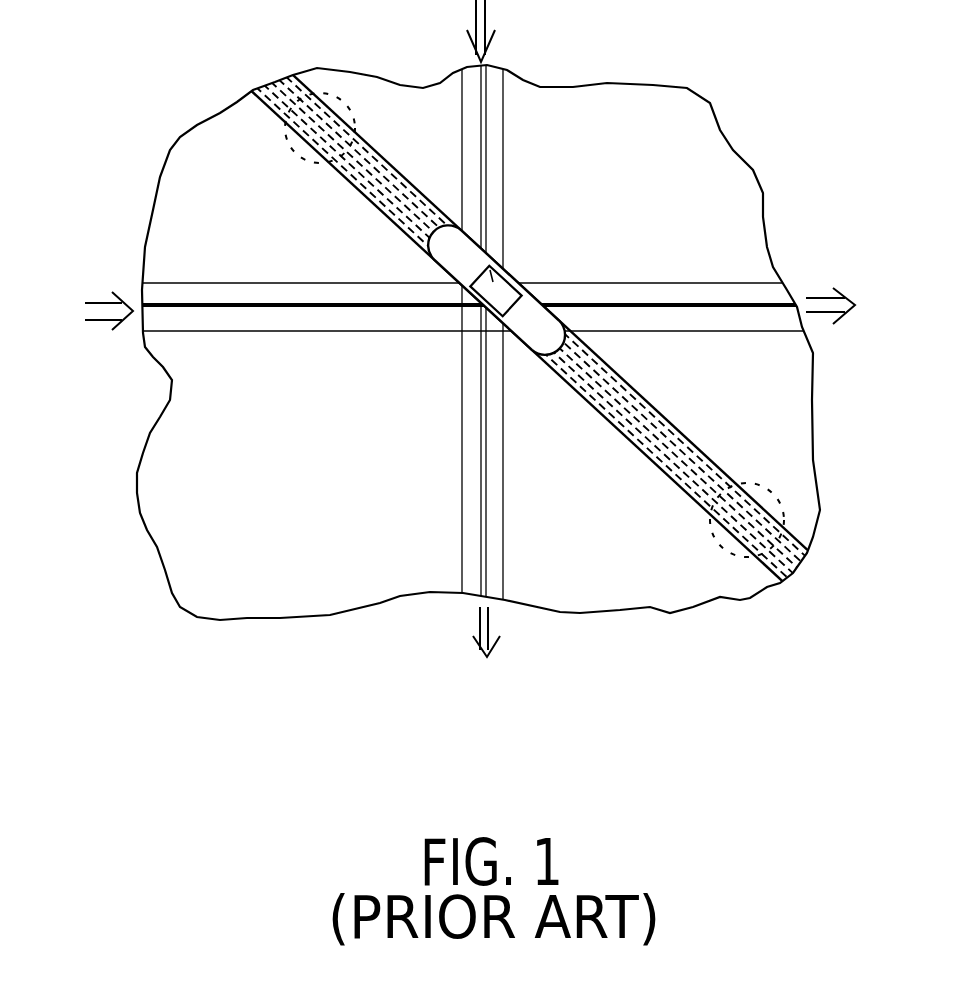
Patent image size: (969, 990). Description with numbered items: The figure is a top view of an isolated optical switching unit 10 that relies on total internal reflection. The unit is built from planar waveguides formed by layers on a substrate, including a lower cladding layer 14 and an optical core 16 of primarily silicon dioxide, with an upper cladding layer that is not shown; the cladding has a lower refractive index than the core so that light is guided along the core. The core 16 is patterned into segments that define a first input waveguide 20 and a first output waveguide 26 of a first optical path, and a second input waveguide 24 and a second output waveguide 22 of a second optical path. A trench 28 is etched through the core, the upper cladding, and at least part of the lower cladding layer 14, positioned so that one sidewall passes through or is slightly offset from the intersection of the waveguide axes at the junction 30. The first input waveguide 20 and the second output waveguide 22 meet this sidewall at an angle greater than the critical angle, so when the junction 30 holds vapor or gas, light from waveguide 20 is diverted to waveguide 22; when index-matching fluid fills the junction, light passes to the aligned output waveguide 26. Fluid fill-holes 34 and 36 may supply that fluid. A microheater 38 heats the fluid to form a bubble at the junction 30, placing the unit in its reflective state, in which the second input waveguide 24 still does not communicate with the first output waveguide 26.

The switching unit 10 is at (126, 161).
The lower cladding layer 14 is at (163, 533).
The optical core 16 is at (197, 333).
The first input waveguide 20 is at (255, 284).
The second output waveguide 22 is at (468, 383).
The second input waveguide 24 is at (493, 148).
The first output waveguide 26 is at (625, 283).
The trench 28 is at (386, 217).
The junction 30 is at (540, 360).
The fluid fill-hole 34 is at (355, 122).
The fluid fill-hole 36 is at (720, 545).
The microheater 38 is at (494, 263).